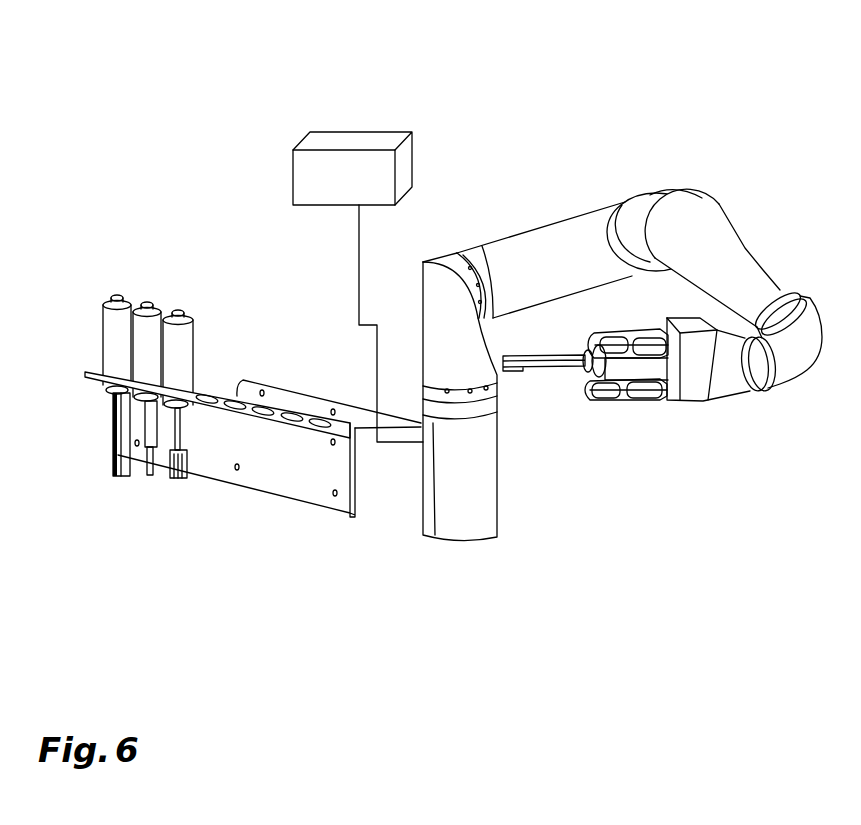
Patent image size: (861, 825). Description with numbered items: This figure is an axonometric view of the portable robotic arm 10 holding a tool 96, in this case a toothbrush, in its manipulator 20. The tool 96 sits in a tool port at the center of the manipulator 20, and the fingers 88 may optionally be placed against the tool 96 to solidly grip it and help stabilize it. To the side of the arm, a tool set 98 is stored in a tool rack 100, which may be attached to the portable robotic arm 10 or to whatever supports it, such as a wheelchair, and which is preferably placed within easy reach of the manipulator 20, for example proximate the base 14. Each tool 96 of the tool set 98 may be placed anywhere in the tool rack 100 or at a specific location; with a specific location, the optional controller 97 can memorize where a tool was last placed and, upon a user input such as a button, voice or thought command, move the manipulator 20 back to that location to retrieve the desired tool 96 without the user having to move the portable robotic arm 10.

The portable robotic arm 10 is at (608, 140).
The base 14 is at (460, 513).
The manipulator 20 is at (682, 387).
The fingers 88 is at (620, 340).
The tool 96 is at (635, 366).
The controller 97 is at (358, 287).
The tool set 98 is at (172, 337).
The tool rack 100 is at (267, 462).